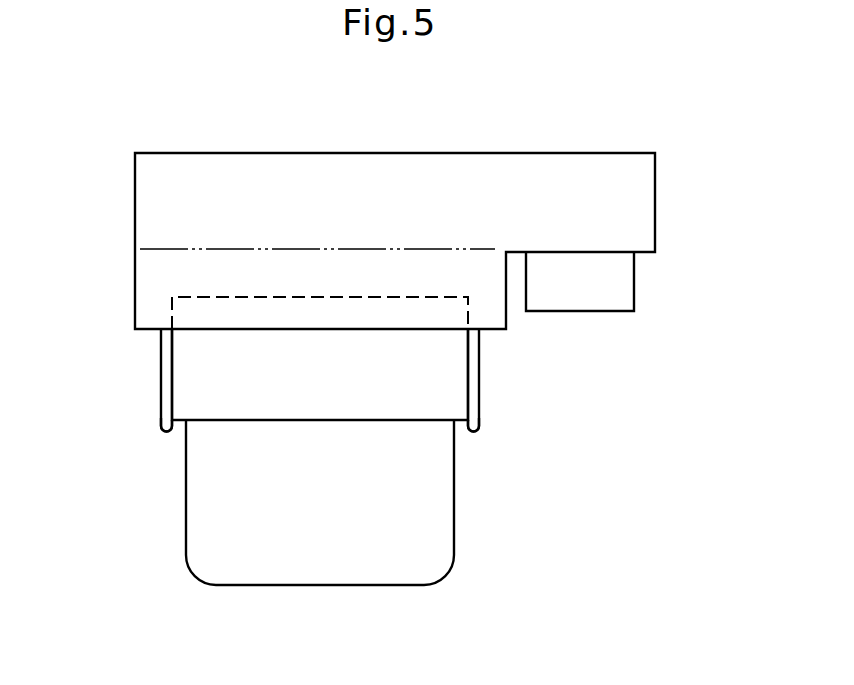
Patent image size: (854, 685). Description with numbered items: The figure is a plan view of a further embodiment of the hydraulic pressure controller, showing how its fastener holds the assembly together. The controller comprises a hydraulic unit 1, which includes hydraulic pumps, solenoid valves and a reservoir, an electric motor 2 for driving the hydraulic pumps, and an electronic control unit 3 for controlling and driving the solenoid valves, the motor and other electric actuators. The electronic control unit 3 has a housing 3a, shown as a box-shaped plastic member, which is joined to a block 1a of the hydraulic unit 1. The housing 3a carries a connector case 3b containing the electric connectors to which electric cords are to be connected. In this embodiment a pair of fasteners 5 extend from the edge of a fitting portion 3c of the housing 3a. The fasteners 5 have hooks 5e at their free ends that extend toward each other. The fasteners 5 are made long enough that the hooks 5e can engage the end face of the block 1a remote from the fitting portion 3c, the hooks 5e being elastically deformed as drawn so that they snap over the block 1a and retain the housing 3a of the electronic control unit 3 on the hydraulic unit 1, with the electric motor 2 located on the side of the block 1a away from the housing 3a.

The hydraulic unit 1 is at (488, 391).
The block 1a is at (228, 403).
The electric motor 2 is at (462, 547).
The electronic control unit 3 is at (662, 199).
The housing 3a is at (245, 176).
The connector case 3b is at (620, 294).
The fitting portion 3c is at (370, 265).
The fastener 5 is at (156, 381).
The hook 5e is at (165, 418).